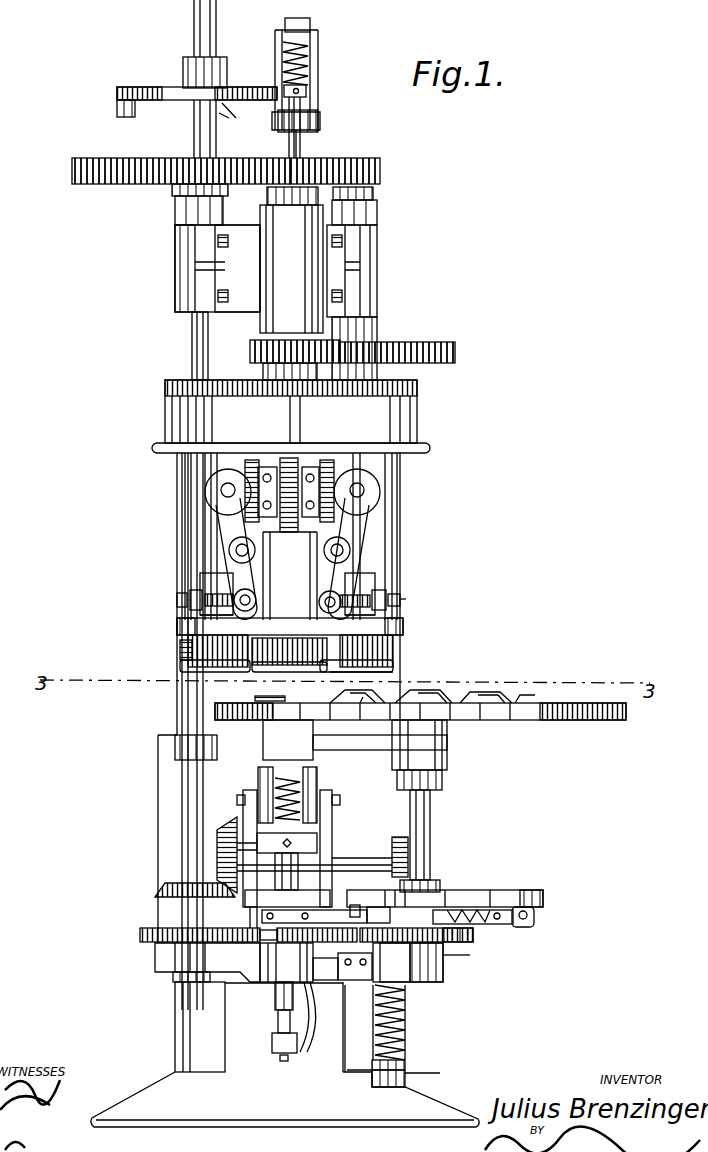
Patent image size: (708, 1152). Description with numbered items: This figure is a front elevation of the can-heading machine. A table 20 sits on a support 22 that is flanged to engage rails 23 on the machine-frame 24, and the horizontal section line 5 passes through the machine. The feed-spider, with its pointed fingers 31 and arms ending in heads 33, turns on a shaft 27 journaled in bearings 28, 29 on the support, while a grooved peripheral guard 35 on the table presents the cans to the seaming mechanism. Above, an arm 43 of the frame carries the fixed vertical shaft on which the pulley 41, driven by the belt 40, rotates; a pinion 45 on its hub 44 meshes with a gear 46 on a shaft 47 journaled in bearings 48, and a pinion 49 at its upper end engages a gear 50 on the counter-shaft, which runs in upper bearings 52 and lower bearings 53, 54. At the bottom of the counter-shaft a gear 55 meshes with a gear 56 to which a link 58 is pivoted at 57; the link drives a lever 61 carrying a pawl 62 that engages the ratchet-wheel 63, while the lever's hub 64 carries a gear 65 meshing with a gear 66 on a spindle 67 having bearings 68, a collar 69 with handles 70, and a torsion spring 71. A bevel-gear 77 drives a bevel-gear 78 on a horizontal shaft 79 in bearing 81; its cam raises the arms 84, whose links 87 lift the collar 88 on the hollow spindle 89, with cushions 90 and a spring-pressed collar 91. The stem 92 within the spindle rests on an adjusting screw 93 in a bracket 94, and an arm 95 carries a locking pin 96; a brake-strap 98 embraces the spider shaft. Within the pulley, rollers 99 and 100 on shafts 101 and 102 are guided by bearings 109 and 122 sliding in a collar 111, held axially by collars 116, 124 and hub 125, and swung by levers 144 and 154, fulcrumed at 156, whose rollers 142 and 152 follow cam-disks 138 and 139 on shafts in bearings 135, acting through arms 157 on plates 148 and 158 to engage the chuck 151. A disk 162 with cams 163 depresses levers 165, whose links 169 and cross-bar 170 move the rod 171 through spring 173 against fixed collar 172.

The cross-bar 170 is at (300, 33).
The spring 173 is at (300, 62).
The links 169 is at (280, 72).
The fixed collar 172 is at (308, 93).
The rod 171 is at (300, 118).
The disk 162 is at (170, 93).
The cams 163 is at (126, 110).
The levers 165 is at (281, 133).
The shaft 47 is at (366, 156).
The gear 50 is at (72, 172).
The pinion 49 is at (378, 178).
The upper bearings 52 is at (177, 276).
The bearings 48 is at (377, 248).
The arm 43 is at (290, 268).
The pivot 57 is at (196, 336).
The pinion 45 is at (276, 347).
The gear 46 is at (455, 352).
The hub 44 is at (283, 375).
The belt 40 is at (291, 411).
The pulley 41 is at (413, 392).
The roller 142 is at (215, 495).
The roller 152 is at (372, 497).
The lever 144 is at (235, 527).
The lever 154 is at (370, 530).
The cam-disk 138 is at (237, 515).
The fulcrum 156 is at (355, 548).
The shaft 101 is at (215, 548).
The shaft 102 is at (360, 565).
The bearings 135 is at (310, 492).
The cam-disk 139 is at (330, 512).
The collar 116 is at (215, 573).
The collar 124 is at (395, 577).
The plate 148 is at (180, 600).
The arm 157 is at (395, 600).
The squared bearing 109 is at (215, 610).
The bearings 122 is at (365, 588).
The plate 158 is at (372, 624).
The hub 125 is at (370, 645).
The collar 111 is at (190, 626).
The roller 99 is at (180, 668).
The roller 100 is at (392, 672).
The heads 33 is at (432, 696).
The pointed fingers 31 is at (483, 697).
The peripheral guard 35 is at (252, 695).
The table 20 is at (420, 724).
The chuck 151 is at (283, 667).
The lower bearing 53 is at (177, 746).
The rails 23 is at (181, 715).
The support 22 is at (160, 822).
The section line 5— 5 is at (225, 773).
The bearing 28 is at (447, 748).
The brake-strap 98 is at (443, 790).
The shaft 27 is at (430, 813).
The bearing 81 is at (400, 862).
The arms 84 is at (262, 775).
The links 87 is at (240, 799).
The bevel-gear 78 is at (222, 828).
The bevel-gear 77 is at (158, 887).
The spring-pressed collar 91 is at (305, 843).
The yielding cushions 90 is at (284, 875).
The collar 88 is at (264, 897).
The horizontal shaft 79 is at (314, 871).
The locking pin 96 is at (358, 905).
The pawl 62 is at (505, 897).
The ratchet-wheel 63 is at (452, 893).
The lever 61 is at (511, 917).
The hub 64 is at (378, 915).
The gear 56 is at (262, 916).
The gear 55 is at (140, 935).
The lower bearing 54 is at (180, 955).
The arm 95 is at (262, 962).
The link 58 is at (345, 940).
The bearings 68 is at (392, 962).
The bearing 29 is at (437, 972).
The gear 65 is at (450, 936).
The spindle 67 is at (406, 1012).
The spring 71 is at (398, 1030).
The collar 69 is at (405, 1065).
The handles 70 is at (440, 1072).
The machine-frame 24 is at (285, 1054).
The hollow spindle 89 is at (276, 997).
The stem 92 is at (280, 1015).
The adjusting screw 93 is at (284, 1025).
The bracket 94 is at (312, 1050).
The gear 66 is at (372, 946).